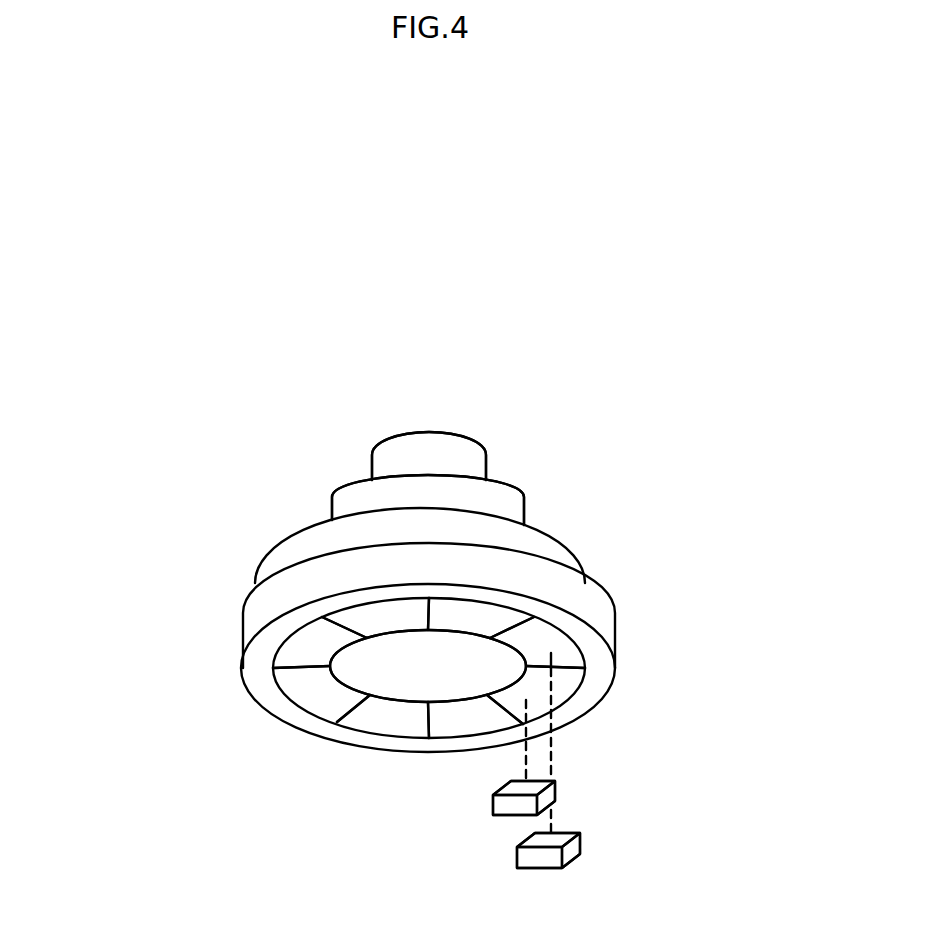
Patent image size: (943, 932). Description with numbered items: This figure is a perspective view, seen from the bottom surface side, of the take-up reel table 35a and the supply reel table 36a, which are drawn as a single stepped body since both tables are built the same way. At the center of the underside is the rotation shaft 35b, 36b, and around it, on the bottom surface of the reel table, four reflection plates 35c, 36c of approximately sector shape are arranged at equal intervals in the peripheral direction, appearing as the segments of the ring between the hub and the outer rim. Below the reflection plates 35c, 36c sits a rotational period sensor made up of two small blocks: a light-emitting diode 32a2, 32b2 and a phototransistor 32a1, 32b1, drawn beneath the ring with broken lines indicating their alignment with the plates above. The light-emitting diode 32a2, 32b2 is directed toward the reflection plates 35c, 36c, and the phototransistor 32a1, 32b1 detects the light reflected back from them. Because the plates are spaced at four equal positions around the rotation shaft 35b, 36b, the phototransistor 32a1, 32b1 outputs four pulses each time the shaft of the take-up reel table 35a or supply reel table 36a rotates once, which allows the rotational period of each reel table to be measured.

The take-up reel table 35a is at (508, 490).
The supply reel table 36a is at (543, 470).
The rotation shaft 35b is at (393, 680).
The rotation shaft 36b is at (353, 721).
The reflection plate 35c is at (367, 608).
The reflection plate 36c is at (462, 662).
The phototransistor 32a1 is at (580, 840).
The phototransistor 32b1 is at (693, 865).
The light-emitting diode 32a2 is at (555, 788).
The light-emitting diode 32b2 is at (675, 784).